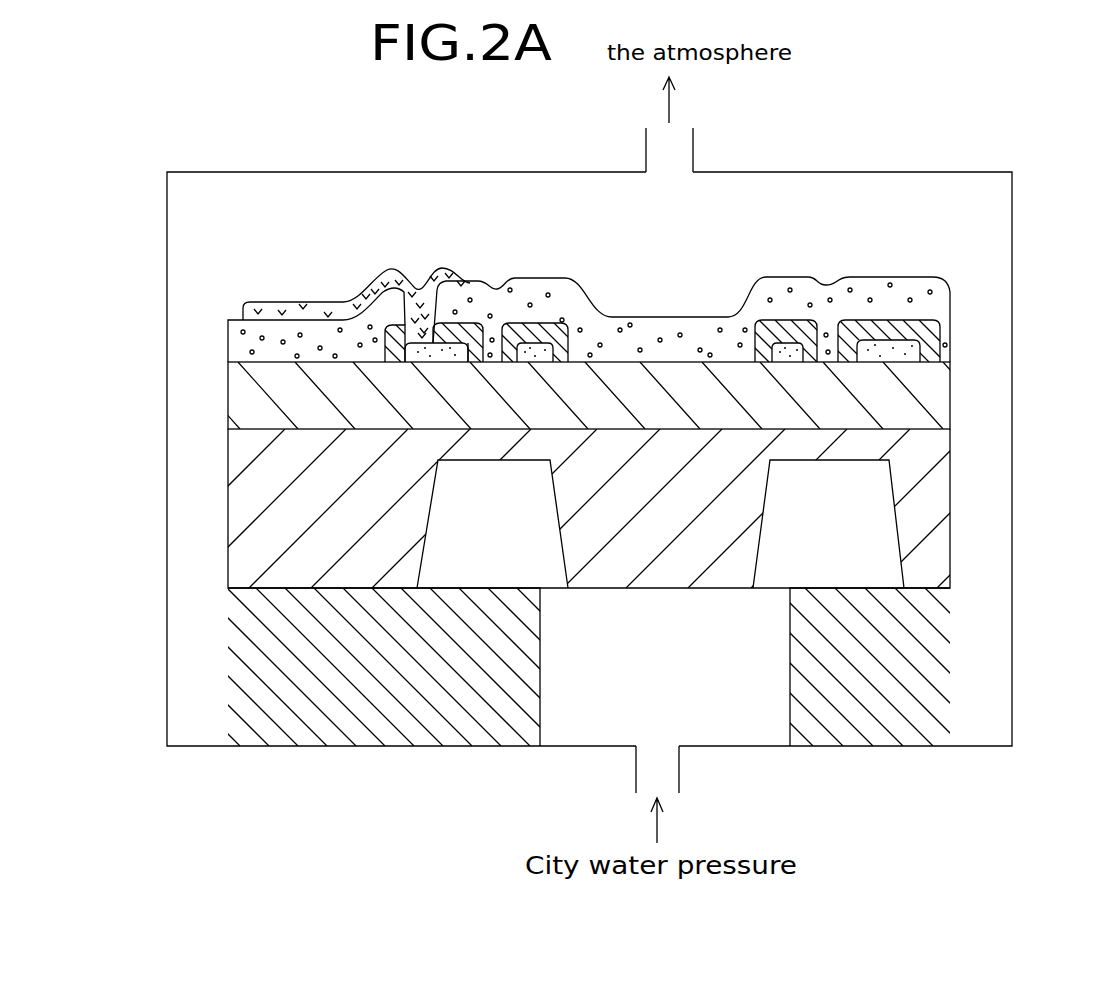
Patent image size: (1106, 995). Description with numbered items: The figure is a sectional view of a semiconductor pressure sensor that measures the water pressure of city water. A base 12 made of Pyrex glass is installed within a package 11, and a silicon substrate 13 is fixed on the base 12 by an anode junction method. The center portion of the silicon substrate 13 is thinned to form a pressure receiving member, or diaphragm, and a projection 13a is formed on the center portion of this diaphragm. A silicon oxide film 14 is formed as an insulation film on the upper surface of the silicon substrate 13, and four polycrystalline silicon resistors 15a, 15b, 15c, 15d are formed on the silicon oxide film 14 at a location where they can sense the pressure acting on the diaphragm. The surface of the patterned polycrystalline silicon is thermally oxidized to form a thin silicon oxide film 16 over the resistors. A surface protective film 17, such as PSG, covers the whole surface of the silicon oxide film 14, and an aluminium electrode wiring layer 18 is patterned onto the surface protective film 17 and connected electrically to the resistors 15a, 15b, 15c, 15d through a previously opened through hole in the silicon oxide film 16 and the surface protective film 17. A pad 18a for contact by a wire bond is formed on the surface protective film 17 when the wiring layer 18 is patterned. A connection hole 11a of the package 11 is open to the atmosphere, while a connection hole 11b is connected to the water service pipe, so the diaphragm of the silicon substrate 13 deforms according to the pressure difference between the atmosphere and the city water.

The package 11 is at (1013, 543).
The connection hole 11a is at (693, 150).
The connection hole 11b is at (675, 772).
The base 12 is at (946, 680).
The silicon substrate 13 is at (945, 510).
The projection 13a is at (665, 590).
The silicon oxide film 14 is at (946, 388).
The polycrystalline silicon resistor 15a is at (457, 347).
The polycrystalline silicon resistor 15b is at (547, 350).
The polycrystalline silicon resistor 15c is at (778, 347).
The polycrystalline silicon resistor 15d is at (872, 348).
The silicon oxide film 16 is at (452, 330).
The surface protective film 17 is at (665, 327).
The aluminium electrode wiring layer 18 is at (364, 296).
The pad 18a is at (289, 290).